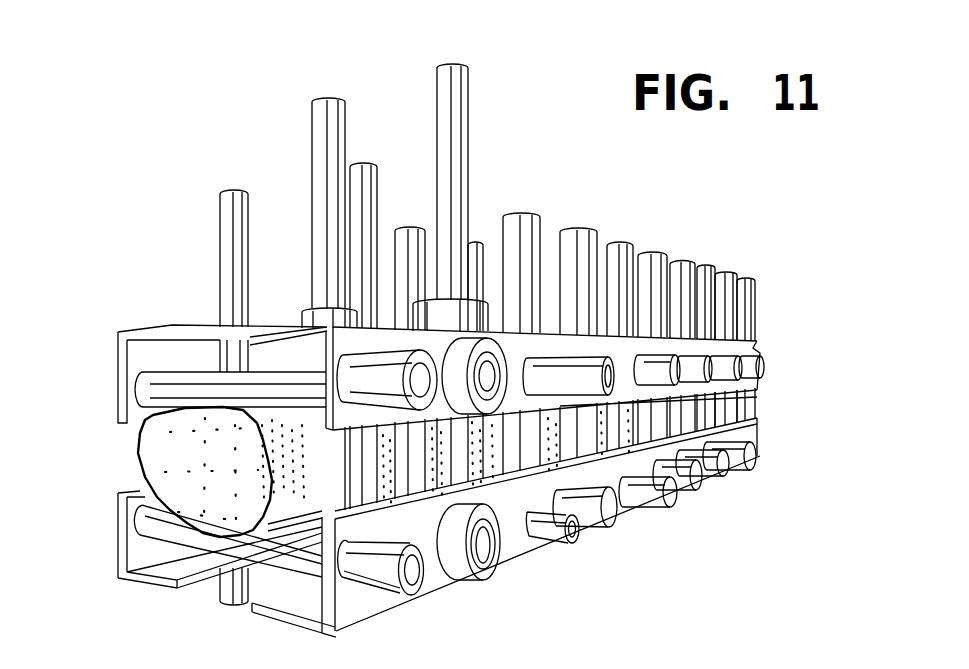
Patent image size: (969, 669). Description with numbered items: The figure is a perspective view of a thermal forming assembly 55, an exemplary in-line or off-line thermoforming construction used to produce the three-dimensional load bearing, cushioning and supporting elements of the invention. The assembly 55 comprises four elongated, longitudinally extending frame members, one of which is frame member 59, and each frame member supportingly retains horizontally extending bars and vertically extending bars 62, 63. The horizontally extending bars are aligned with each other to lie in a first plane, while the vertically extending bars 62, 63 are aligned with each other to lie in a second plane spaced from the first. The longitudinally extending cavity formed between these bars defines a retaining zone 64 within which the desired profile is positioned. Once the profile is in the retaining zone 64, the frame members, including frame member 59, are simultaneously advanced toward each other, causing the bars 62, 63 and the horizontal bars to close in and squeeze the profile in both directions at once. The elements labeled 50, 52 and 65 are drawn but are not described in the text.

The upper channel member 50 is at (147, 357).
The lower channel member 52 is at (140, 553).
The thermal forming assembly 55 is at (764, 296).
The frame member 59 is at (517, 540).
The vertically extending bar 62 is at (230, 236).
The vertically extending bar 63 is at (320, 151).
The retaining zone 64 is at (160, 462).
The upper rollers 65 is at (377, 388).